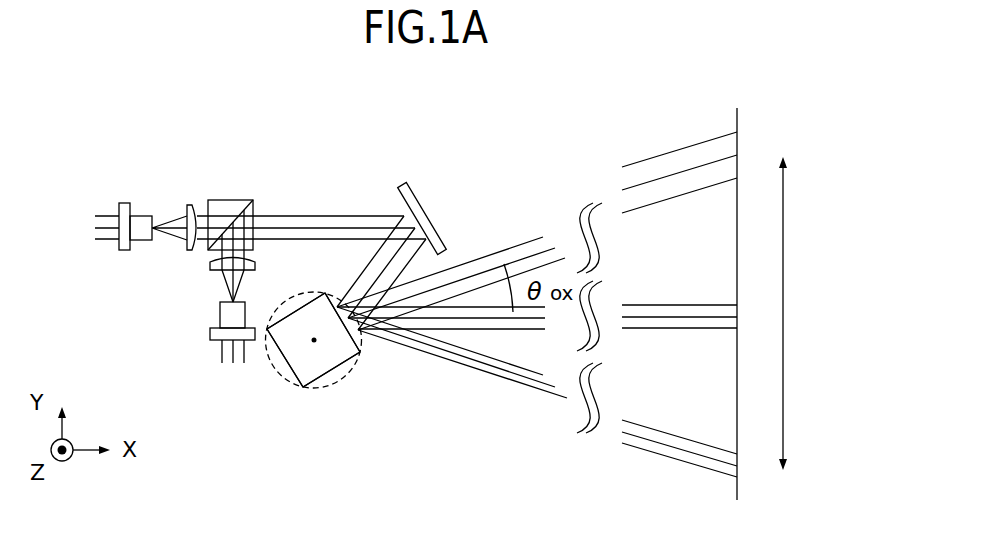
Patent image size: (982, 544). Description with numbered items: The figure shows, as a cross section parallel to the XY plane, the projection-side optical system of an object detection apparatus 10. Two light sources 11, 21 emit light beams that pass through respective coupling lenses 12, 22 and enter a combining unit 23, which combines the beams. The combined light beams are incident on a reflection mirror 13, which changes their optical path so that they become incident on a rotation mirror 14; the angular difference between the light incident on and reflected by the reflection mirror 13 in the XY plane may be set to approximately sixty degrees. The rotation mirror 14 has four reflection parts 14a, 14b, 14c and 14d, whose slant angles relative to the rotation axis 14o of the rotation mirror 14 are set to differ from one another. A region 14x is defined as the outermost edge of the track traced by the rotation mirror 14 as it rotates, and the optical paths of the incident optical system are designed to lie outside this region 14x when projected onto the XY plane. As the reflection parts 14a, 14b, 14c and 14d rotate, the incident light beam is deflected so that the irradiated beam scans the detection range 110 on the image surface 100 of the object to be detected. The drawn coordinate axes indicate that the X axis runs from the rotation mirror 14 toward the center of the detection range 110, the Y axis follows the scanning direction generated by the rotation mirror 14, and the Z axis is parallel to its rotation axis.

The object detection apparatus 10 is at (91, 120).
The light source 11 is at (121, 202).
The coupling lens 12 is at (192, 204).
The reflection mirror 13 is at (401, 181).
The rotation mirror 14 is at (303, 397).
The reflection part 14a is at (362, 349).
The reflection part 14b is at (258, 310).
The reflection part 14c is at (285, 381).
The reflection part 14d is at (341, 380).
The rotation axis 14o is at (314, 341).
The region 14x is at (323, 391).
The light source 21 is at (209, 334).
The coupling lens 22 is at (209, 265).
The combining unit 23 is at (235, 199).
The image surface 100 is at (739, 121).
The detection range 110 is at (785, 312).